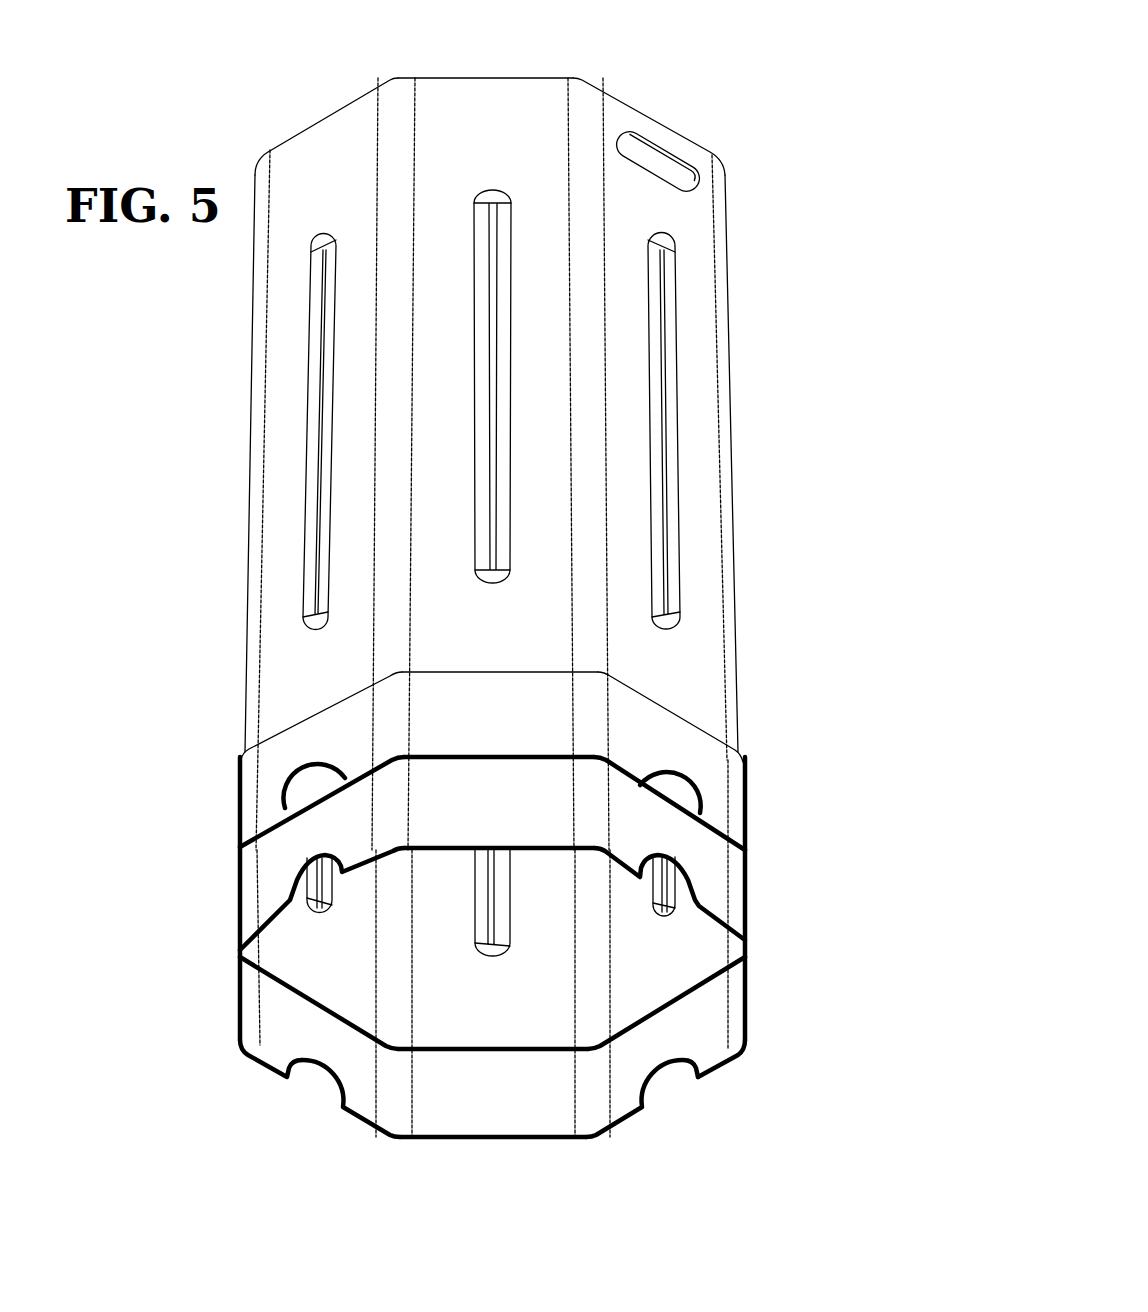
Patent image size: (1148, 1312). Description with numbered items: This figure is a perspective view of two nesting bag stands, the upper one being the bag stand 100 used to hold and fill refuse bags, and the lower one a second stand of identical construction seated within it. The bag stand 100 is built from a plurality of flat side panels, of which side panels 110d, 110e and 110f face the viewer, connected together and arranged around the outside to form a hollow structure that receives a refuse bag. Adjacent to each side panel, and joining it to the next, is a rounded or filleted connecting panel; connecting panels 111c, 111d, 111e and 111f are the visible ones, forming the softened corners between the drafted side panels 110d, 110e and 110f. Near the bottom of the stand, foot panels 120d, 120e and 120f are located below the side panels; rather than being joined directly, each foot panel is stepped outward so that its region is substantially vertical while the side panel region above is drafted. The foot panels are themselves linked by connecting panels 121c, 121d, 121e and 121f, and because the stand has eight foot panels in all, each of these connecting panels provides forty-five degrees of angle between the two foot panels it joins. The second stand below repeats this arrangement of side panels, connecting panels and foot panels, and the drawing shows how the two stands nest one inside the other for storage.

The bag stand 100 is at (253, 410).
The side panel 110d is at (325, 155).
The side panel 110e is at (458, 108).
The side panel 110f is at (628, 122).
The connecting panel 111c is at (262, 215).
The connecting panel 111d is at (398, 100).
The connecting panel 111e is at (580, 100).
The connecting panel 111f is at (722, 157).
The foot panel 120d is at (310, 738).
The foot panel 120e is at (470, 682).
The foot panel 120f is at (640, 718).
The connecting panel 121c is at (245, 790).
The connecting panel 121d is at (398, 738).
The connecting panel 121e is at (598, 735).
The connecting panel 121f is at (746, 795).